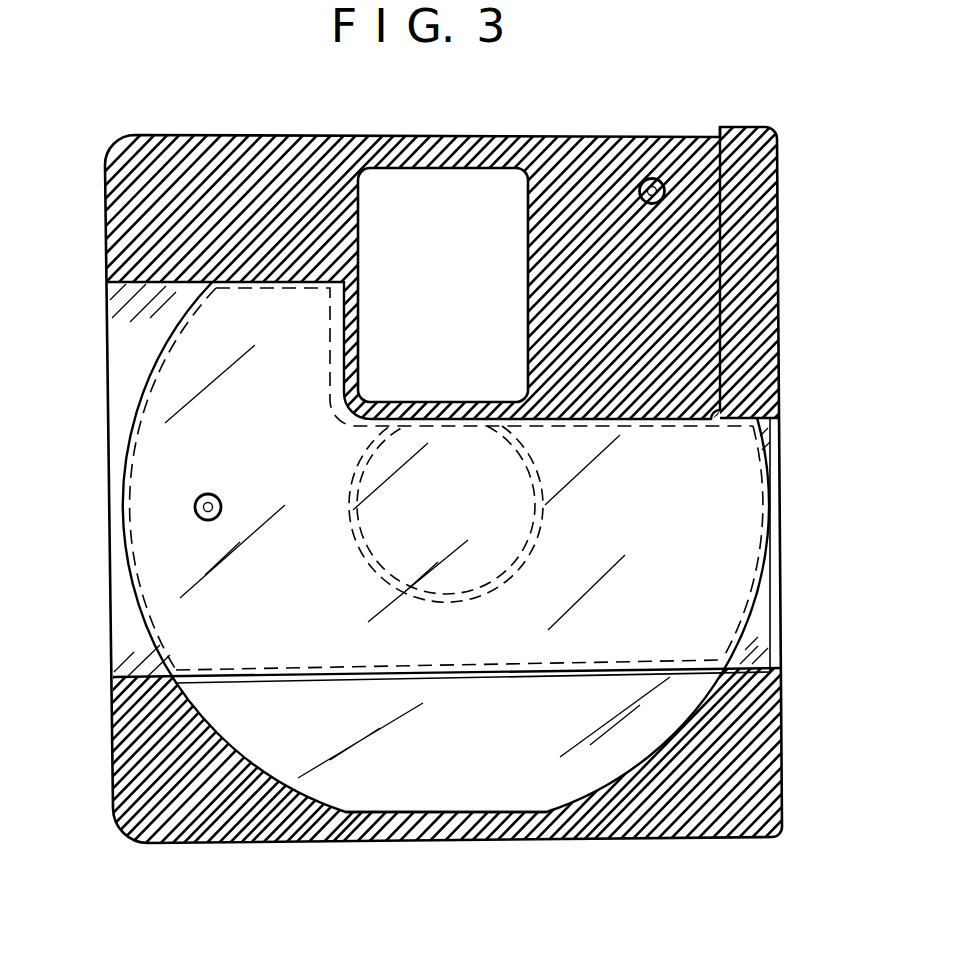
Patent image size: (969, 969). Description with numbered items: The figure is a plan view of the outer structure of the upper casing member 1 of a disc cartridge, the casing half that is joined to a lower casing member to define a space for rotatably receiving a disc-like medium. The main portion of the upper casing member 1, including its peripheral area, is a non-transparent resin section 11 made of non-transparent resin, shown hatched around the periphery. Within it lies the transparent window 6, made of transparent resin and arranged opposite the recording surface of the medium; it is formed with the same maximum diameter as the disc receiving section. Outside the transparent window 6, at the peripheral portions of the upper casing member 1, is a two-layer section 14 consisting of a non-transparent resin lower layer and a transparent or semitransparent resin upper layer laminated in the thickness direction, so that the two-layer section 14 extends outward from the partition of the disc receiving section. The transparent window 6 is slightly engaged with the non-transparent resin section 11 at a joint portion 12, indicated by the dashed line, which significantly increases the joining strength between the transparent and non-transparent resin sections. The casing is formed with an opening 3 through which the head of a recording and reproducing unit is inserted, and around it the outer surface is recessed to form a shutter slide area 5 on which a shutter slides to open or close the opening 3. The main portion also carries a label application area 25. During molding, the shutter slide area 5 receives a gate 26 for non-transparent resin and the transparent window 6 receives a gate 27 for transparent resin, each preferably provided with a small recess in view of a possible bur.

The upper casing member 1 is at (241, 165).
The opening 3 is at (430, 183).
The shutter slide area 5 is at (586, 160).
The transparent window 6 is at (792, 503).
The non-transparent resin section 11 is at (770, 290).
The joint portion 12 is at (260, 285).
The two-layer section 14 is at (122, 318).
The label application area 25 is at (461, 800).
The gate for non-transparent resin 26 is at (656, 178).
The gate for transparent resin 27 is at (213, 494).